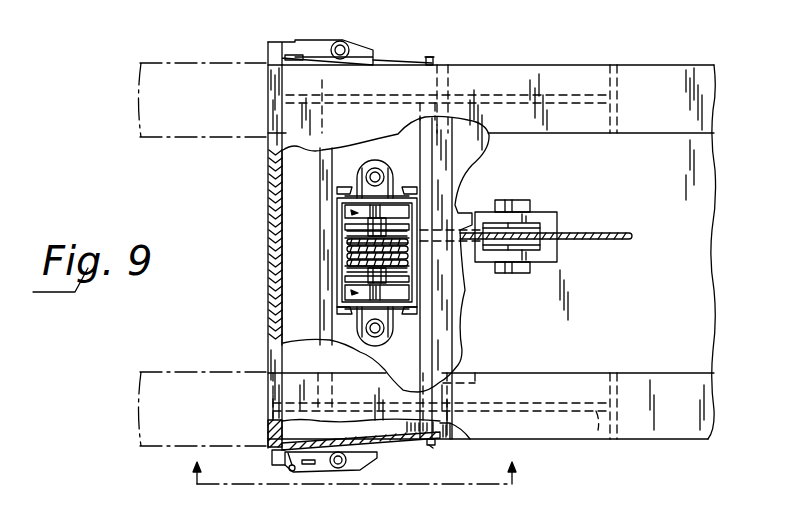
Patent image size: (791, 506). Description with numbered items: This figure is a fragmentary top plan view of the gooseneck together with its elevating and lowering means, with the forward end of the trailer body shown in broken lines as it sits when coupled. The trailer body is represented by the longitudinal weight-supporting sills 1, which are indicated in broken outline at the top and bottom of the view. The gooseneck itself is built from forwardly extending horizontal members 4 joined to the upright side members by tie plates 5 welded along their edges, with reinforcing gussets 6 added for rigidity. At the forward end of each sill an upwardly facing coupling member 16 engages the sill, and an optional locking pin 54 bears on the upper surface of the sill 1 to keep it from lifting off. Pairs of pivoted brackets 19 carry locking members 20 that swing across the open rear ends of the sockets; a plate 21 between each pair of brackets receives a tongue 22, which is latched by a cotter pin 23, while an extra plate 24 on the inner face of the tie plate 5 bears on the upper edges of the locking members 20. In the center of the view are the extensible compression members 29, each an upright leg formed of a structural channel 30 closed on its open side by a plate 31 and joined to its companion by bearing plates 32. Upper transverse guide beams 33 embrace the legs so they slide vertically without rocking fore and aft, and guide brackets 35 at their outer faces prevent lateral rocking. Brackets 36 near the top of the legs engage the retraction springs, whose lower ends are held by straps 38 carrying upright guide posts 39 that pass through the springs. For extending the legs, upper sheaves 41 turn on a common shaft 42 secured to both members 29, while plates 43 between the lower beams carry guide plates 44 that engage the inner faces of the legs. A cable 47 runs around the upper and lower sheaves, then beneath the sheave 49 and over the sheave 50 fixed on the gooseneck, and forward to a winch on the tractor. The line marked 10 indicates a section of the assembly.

The longitudinal sill 1 is at (170, 138).
The horizontal member 4 is at (572, 442).
The tie plate 5 is at (268, 181).
The reinforcing gusset 6 is at (598, 440).
The section line 10 is at (348, 466).
The coupling member 16 is at (403, 441).
The bracket 19 is at (268, 47).
The locking member 20 is at (267, 431).
The plate 21 is at (273, 452).
The tongue 22 is at (297, 38).
The cotter pin 23 is at (310, 468).
The extra plate 24 is at (268, 200).
The extensible compression member 29 is at (345, 223).
The structural channel 30 is at (345, 228).
The plate 31 is at (342, 214).
The bearing plate 32 is at (344, 238).
The upper transverse guide beam 33 is at (321, 178).
The guide bracket 35 is at (337, 191).
The bracket 36 is at (360, 169).
The strap 38 is at (395, 176).
The guide post 39 is at (377, 167).
The upper sheave 41 is at (406, 263).
The shaft 42 is at (381, 212).
The plate 43 is at (344, 248).
The guide plate 44 is at (368, 274).
The cable 47 is at (611, 234).
The sheave 49 is at (408, 250).
The sheave 50 is at (538, 226).
The locking pin 54 is at (433, 60).